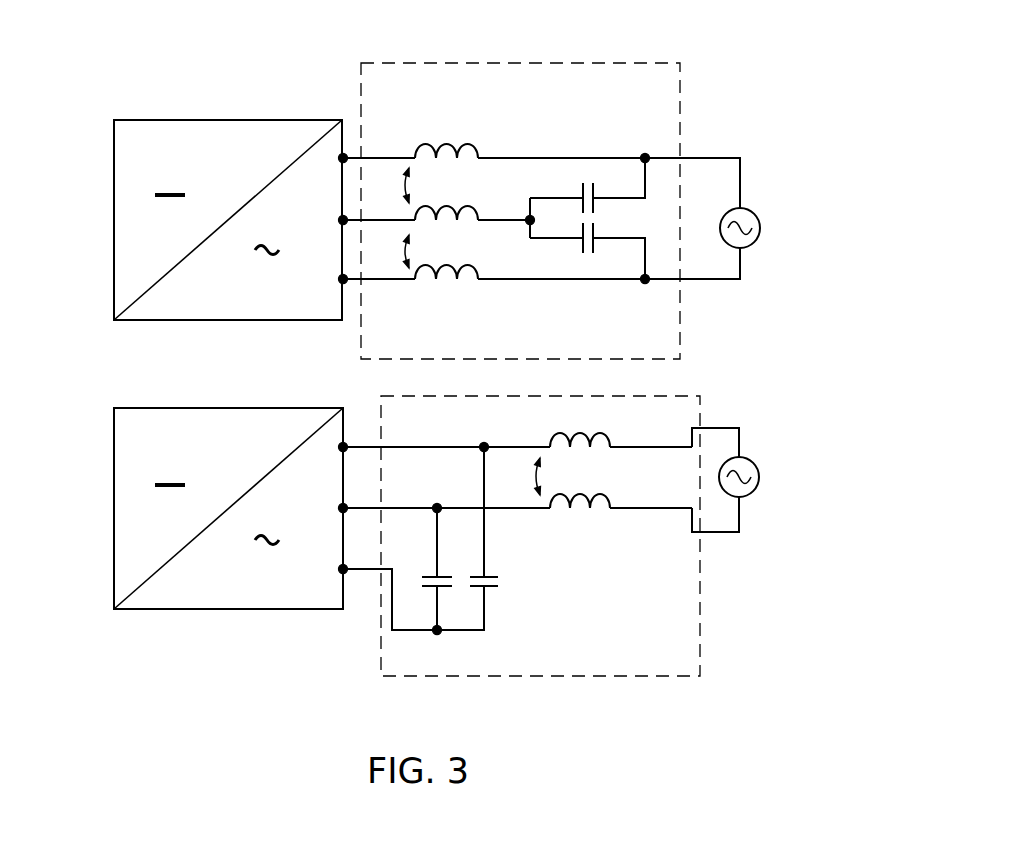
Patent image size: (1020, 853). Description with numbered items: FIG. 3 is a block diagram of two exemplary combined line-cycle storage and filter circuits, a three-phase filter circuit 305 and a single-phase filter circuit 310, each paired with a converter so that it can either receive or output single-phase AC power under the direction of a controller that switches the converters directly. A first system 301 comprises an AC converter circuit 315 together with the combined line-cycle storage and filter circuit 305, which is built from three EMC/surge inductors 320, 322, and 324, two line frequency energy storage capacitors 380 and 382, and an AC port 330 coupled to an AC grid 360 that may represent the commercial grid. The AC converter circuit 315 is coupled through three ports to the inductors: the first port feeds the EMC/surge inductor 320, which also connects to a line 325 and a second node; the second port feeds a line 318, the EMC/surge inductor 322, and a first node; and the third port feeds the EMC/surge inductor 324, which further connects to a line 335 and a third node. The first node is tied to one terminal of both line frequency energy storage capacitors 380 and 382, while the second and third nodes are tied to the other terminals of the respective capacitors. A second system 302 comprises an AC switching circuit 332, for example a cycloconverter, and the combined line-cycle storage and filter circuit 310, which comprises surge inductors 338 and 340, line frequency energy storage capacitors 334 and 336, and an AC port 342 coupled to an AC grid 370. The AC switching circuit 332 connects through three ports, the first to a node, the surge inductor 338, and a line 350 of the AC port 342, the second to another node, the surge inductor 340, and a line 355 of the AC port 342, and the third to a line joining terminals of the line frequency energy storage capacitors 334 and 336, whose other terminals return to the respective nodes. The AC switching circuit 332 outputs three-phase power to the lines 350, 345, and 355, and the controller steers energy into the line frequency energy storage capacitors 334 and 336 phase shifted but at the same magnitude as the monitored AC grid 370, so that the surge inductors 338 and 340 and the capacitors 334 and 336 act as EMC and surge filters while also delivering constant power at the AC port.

The first system 301 is at (67, 238).
The second system 302 is at (67, 510).
The combined line-cycle storage and filter circuit 305 is at (520, 60).
The combined line-cycle storage and filter circuit 310 is at (423, 642).
The AC converter circuit 315 is at (243, 120).
The line 318 is at (375, 221).
The EMC/surge inductor 320 is at (453, 145).
The EMC/surge inductor 322 is at (433, 207).
The EMC/surge inductor 324 is at (433, 268).
The line 325 is at (715, 157).
The AC port 330 is at (763, 197).
The AC switching circuit 332 is at (112, 427).
The line frequency energy storage capacitor 334 is at (433, 572).
The line 335 is at (725, 283).
The line frequency energy storage capacitor 336 is at (495, 575).
The surge inductor 338 is at (603, 435).
The surge inductor 340 is at (590, 490).
The AC port 342 is at (782, 452).
The line 345 is at (362, 570).
The line 350 is at (722, 427).
The line 355 is at (732, 533).
The AC grid 360 is at (762, 227).
The AC grid 370 is at (760, 477).
The line frequency energy storage capacitor 380 is at (597, 203).
The line frequency energy storage capacitor 382 is at (580, 243).